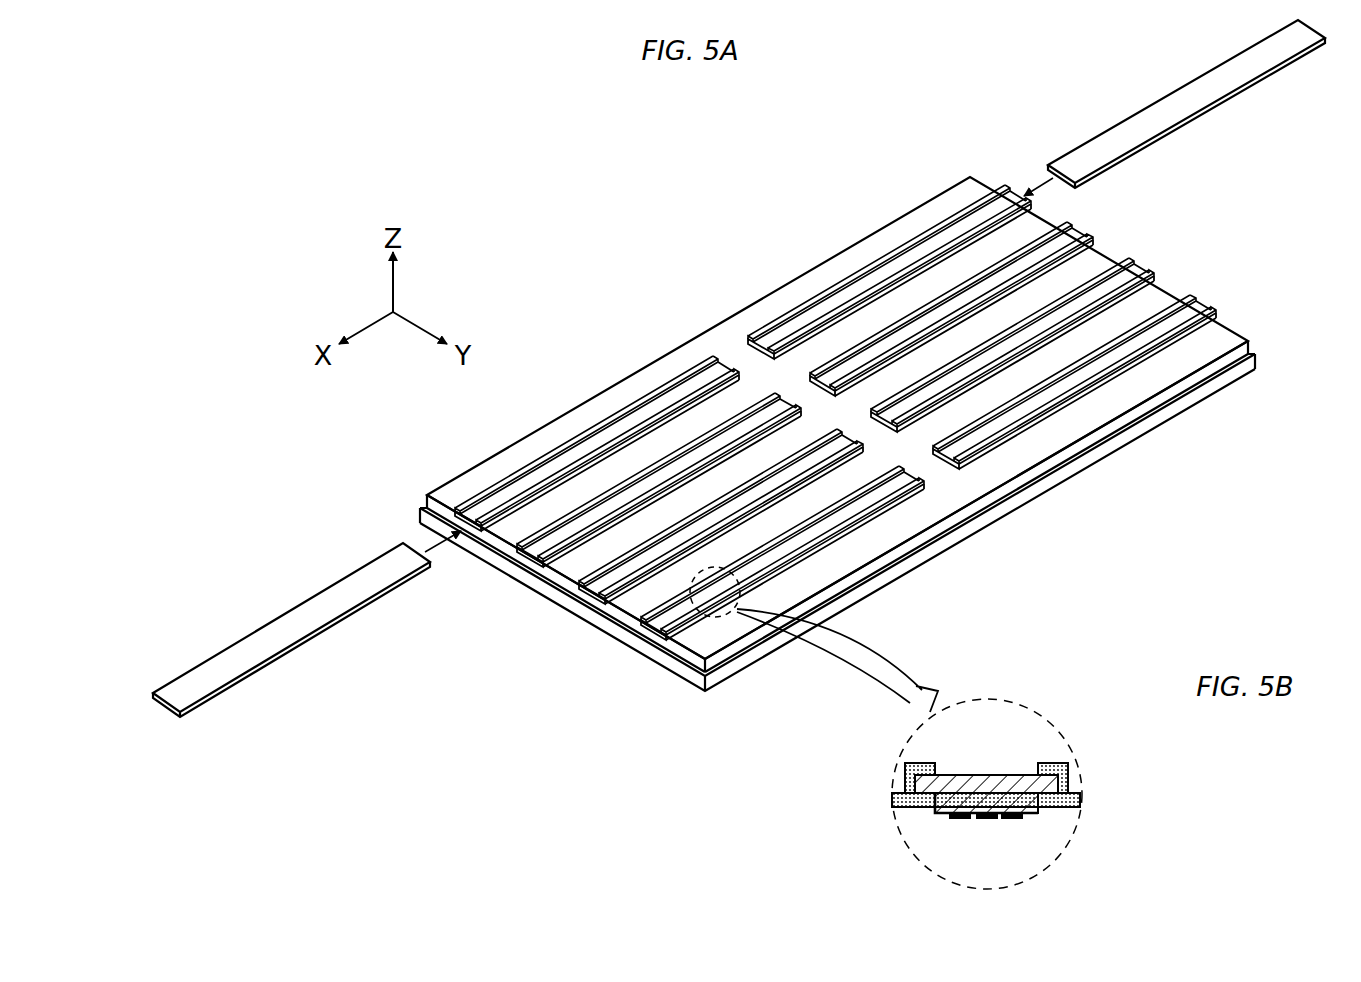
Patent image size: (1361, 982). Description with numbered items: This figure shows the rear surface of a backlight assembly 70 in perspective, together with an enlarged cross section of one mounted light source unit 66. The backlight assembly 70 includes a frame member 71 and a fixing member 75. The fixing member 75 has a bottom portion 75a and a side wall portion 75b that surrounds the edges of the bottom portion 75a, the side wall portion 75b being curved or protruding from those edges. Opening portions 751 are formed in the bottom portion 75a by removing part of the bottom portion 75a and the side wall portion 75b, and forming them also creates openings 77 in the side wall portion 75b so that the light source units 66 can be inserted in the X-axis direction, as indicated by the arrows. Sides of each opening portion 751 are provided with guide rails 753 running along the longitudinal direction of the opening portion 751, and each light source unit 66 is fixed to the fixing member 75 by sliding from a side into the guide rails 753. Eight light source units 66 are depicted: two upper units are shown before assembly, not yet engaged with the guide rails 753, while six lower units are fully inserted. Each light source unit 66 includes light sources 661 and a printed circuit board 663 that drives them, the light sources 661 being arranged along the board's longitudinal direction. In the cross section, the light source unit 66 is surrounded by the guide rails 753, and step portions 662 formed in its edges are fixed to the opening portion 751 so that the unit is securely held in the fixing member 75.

In FIG. 5A, the light source unit 66 is at (1247, 106).
In FIG. 5B, the light source unit 66 is at (1024, 754).
In FIG. 5A, the backlight assembly 70 is at (600, 260).
In FIG. 5A, the frame member 71 is at (1256, 352).
In FIG. 5A, the fixing member 75 is at (1256, 336).
In FIG. 5B, the fixing member 75 is at (886, 800).
In FIG. 5A, the bottom portion 75a is at (920, 515).
In FIG. 5A, the side wall portion 75b is at (560, 580).
In FIG. 5A, the opening 77 is at (648, 633).
In FIG. 5A, the opening portion 751 is at (780, 340).
In FIG. 5B, the opening portion 751 is at (1042, 806).
In FIG. 5A, the guide rail 753 is at (950, 250).
In FIG. 5B, the guide rail 753 is at (905, 770).
In FIG. 5B, the light source 661 is at (1012, 819).
In FIG. 5B, the step portion 662 is at (930, 808).
In FIG. 5B, the printed circuit board 663 is at (985, 775).